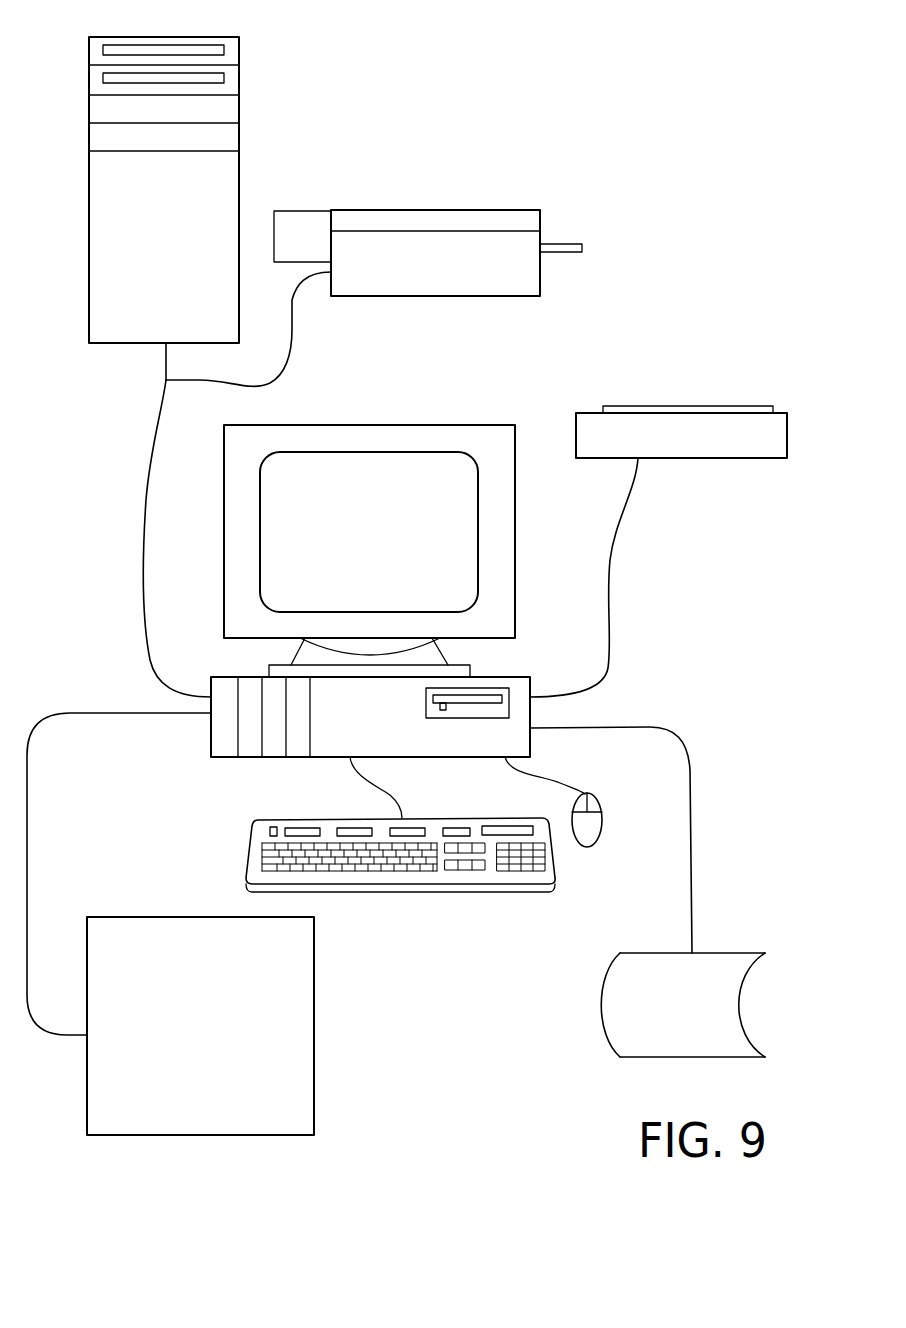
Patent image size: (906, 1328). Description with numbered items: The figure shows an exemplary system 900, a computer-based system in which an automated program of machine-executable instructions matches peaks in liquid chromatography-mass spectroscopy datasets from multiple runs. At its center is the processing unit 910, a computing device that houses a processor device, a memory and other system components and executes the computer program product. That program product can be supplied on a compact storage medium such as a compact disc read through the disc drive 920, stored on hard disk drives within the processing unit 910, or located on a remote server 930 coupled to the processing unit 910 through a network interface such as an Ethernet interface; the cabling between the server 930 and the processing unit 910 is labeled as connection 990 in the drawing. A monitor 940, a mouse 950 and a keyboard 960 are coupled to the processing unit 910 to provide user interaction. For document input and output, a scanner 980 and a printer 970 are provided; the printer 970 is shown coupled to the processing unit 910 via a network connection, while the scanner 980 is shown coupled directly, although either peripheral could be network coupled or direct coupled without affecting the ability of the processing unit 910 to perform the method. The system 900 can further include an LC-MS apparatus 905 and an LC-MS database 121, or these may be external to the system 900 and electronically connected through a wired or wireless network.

The exemplary system 900 is at (707, 94).
The LC-MS apparatus 905 is at (222, 1034).
The processing unit 910 is at (205, 728).
The disc drive 920 is at (240, 50).
The server 930 is at (240, 172).
The monitor 940 is at (458, 425).
The mouse 950 is at (596, 845).
The keyboard 960 is at (233, 845).
The printer 970 is at (492, 210).
The scanner 980 is at (730, 406).
The network connection cable 990 is at (161, 424).
The LC-MS database 121 is at (683, 1005).